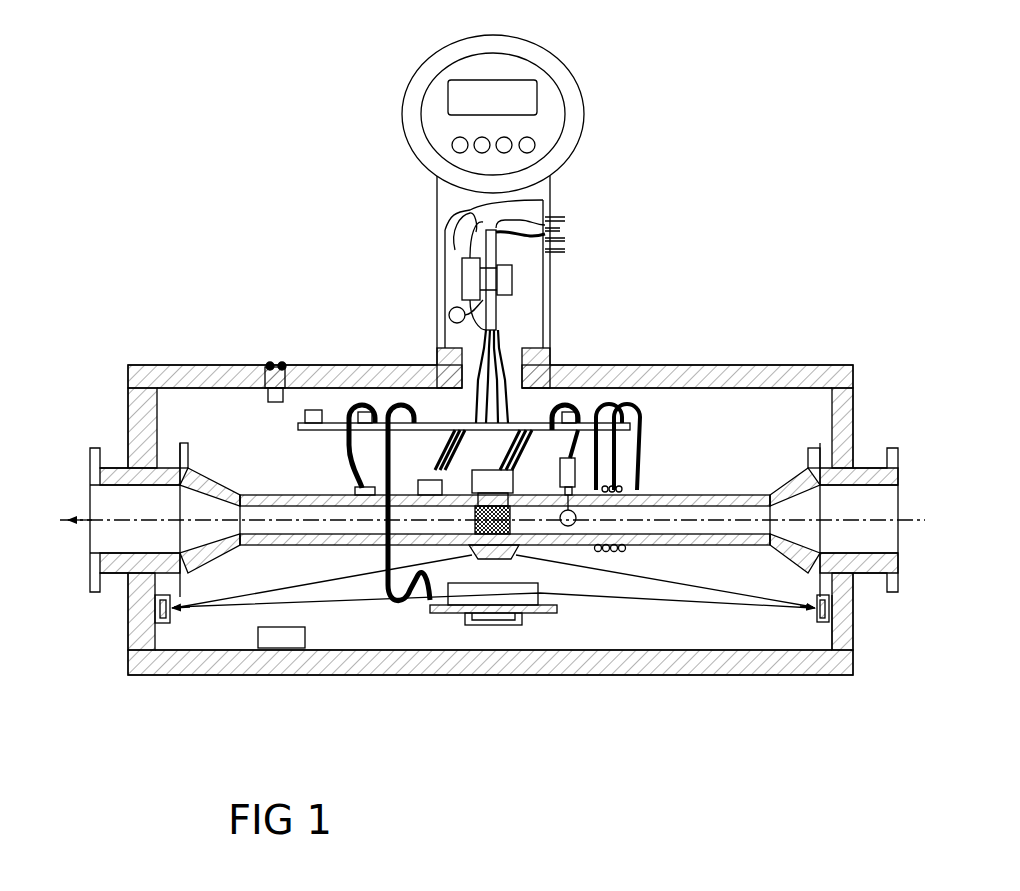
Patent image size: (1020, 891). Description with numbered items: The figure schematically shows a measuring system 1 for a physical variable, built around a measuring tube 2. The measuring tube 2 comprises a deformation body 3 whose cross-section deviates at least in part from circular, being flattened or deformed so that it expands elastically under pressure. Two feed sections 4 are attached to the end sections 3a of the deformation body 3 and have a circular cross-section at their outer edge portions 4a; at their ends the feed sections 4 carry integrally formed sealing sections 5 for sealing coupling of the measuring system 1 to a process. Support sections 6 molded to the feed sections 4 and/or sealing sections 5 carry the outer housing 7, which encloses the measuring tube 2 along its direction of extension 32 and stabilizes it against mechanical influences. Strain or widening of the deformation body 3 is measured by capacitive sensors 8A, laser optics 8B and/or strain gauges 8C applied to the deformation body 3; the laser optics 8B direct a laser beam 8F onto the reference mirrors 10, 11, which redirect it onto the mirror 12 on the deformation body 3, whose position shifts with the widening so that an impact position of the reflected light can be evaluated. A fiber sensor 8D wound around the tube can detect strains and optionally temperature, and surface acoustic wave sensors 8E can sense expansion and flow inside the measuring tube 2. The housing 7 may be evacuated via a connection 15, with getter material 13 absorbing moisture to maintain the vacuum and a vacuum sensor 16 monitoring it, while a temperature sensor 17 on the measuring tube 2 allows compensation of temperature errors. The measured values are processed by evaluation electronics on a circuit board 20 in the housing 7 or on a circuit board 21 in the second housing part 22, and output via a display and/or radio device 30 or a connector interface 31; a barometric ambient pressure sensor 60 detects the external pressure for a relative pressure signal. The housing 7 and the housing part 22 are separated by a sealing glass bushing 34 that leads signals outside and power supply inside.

The measuring system 1 is at (772, 196).
The measuring tube 2 is at (240, 500).
The deformation body 3 is at (712, 494).
The end sections 3a is at (238, 540).
The feed sections 4 is at (795, 482).
The outer edge portions 4a is at (160, 505).
The sealing sections 5 is at (95, 456).
The support sections 6 is at (140, 405).
The housing 7 is at (735, 376).
The capacitive sensors 8A is at (428, 494).
The laser optics 8B is at (475, 600).
The strain gauges 8C is at (513, 555).
The fiber sensor 8D is at (640, 552).
The surface acoustic wave sensors 8E is at (362, 490).
The laser beam 8F is at (338, 603).
The mirror 10 is at (157, 612).
The mirror 11 is at (830, 612).
The mirror 12 is at (487, 522).
The getter material 13 is at (280, 640).
The connection 15 is at (266, 364).
The vacuum sensor 16 is at (312, 410).
The temperature sensor 17 is at (573, 528).
The circuit board 20 is at (418, 421).
The circuit board 21 is at (462, 272).
The second housing part 22 is at (530, 286).
The display and/or radio device 30 is at (555, 110).
The connector interface 31 is at (556, 236).
The direction of extension 32 is at (68, 526).
The sealing glass bushing 34 is at (540, 365).
The barometric ambient pressure sensor 60 is at (450, 316).